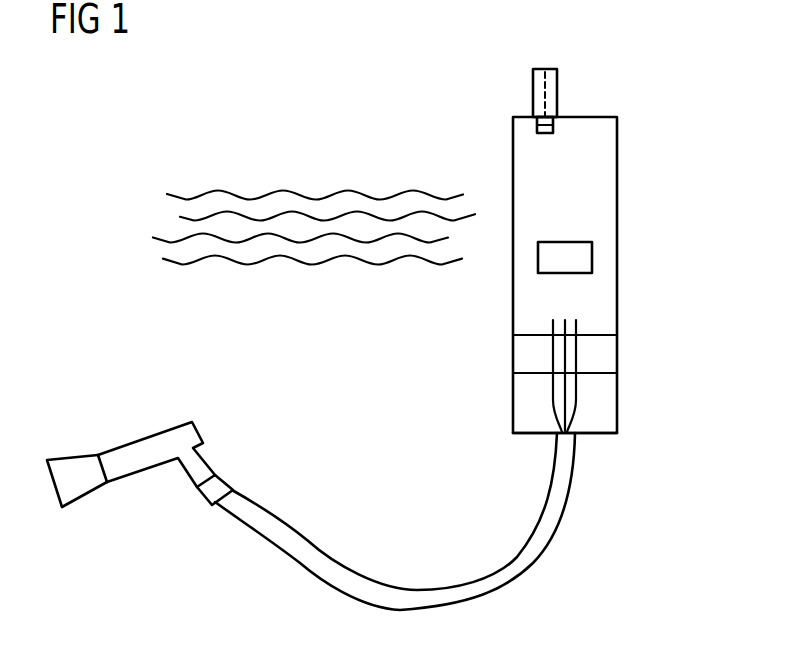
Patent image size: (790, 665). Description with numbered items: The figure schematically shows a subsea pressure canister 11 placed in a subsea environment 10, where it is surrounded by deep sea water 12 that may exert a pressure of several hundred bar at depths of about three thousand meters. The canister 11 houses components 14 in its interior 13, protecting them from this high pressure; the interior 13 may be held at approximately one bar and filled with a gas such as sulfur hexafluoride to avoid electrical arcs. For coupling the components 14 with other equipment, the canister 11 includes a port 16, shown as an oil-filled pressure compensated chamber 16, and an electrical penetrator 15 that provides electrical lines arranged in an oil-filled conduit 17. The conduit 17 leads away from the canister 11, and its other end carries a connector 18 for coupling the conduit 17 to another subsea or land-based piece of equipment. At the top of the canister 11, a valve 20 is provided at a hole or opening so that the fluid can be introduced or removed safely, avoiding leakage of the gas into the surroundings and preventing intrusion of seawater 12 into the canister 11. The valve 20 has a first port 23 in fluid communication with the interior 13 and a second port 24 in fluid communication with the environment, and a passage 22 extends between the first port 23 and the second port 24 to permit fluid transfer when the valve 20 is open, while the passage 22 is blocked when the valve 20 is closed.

The subsea environment 10 is at (143, 128).
The subsea pressure canister 11 is at (617, 142).
The deep sea water 12 is at (313, 195).
The interior 13 is at (605, 197).
The components 14 is at (592, 257).
The electrical penetrator 15 is at (605, 355).
The port 16 is at (605, 405).
The oil-filled conduit 17 is at (545, 537).
The connector 18 is at (134, 440).
The valve 20 is at (506, 78).
The passage 22 is at (553, 86).
The first port 23 is at (546, 134).
The second port 24 is at (545, 68).